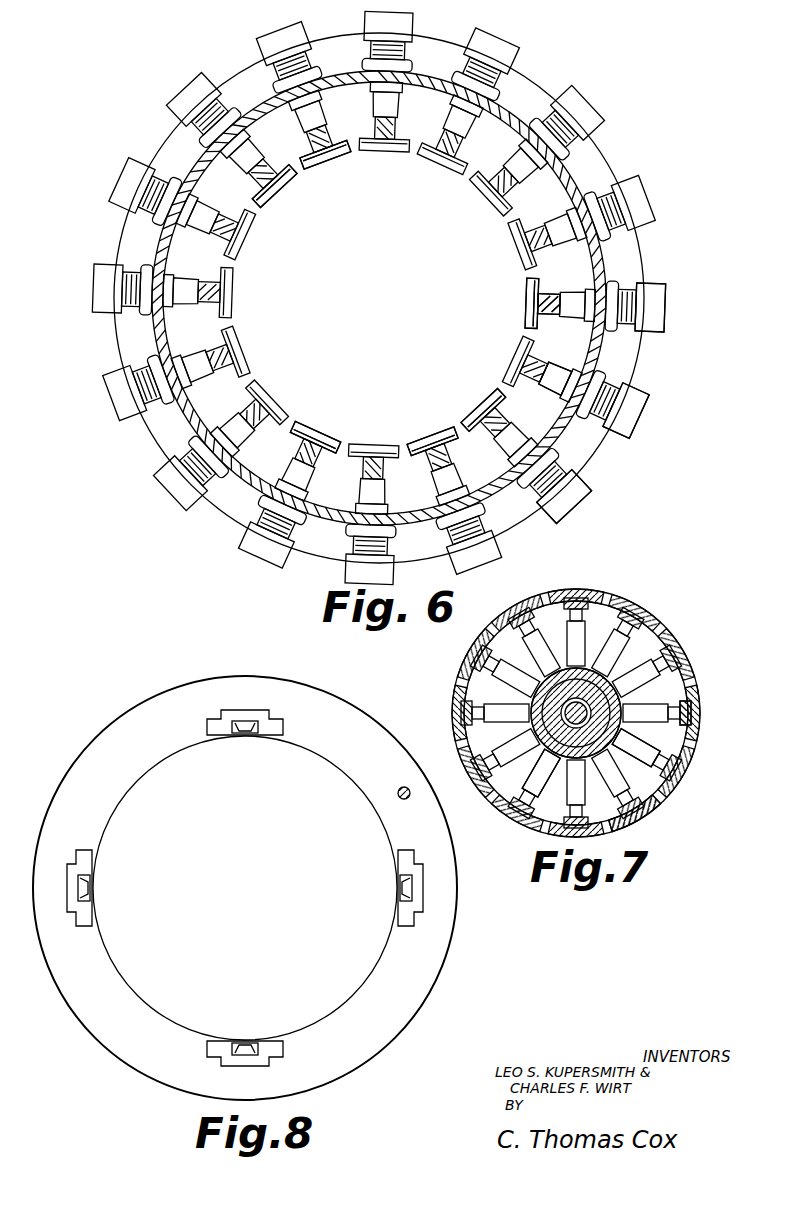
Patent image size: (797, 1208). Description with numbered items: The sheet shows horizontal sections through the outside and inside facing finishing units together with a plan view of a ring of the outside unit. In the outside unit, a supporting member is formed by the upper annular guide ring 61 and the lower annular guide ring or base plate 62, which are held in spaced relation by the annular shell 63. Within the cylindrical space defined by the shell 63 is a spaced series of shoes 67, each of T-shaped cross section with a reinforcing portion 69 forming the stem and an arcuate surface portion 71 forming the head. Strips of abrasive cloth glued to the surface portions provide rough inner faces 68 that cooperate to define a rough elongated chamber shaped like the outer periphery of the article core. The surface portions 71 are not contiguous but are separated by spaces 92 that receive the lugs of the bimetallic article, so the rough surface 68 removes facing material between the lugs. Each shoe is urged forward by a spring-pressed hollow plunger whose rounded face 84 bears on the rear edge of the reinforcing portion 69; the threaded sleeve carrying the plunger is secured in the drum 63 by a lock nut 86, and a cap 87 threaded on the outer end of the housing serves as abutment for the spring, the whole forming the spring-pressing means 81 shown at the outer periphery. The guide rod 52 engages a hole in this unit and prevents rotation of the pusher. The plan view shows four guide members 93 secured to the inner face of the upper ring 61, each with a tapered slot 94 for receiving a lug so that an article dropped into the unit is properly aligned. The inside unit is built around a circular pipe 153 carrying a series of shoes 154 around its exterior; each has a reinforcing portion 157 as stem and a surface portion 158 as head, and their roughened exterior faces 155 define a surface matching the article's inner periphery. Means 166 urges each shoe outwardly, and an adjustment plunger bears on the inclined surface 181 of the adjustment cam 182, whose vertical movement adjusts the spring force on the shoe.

In FIG. 6, the lower annular guide ring 62 is at (628, 350).
In FIG. 6, the annular shell 63 is at (588, 440).
In FIG. 6, the shoes 67 is at (290, 388).
In FIG. 6, the rough inner faces 68 is at (282, 197).
In FIG. 6, the reinforcing portion 69 is at (496, 445).
In FIG. 6, the surface portion 71 is at (500, 400).
In FIG. 6, the adjusting block 81 is at (590, 517).
In FIG. 6, the rounded face 84 is at (556, 376).
In FIG. 6, the lock nut 86 is at (645, 290).
In FIG. 6, the cap 87 is at (632, 410).
In FIG. 6, the spaces 92 is at (524, 334).
In FIG. 7, the circular pipe 153 is at (604, 750).
In FIG. 7, the shoes 154 is at (693, 788).
In FIG. 7, the roughened exterior faces 155 is at (698, 768).
In FIG. 7, the reinforcing portion 157 is at (688, 704).
In FIG. 7, the surface portion 158 is at (665, 805).
In FIG. 7, the urging means 166 is at (649, 747).
In FIG. 7, the inclined surface 181 is at (540, 733).
In FIG. 7, the adjustment cam 182 is at (548, 756).
In FIG. 8, the guide rod 52 is at (410, 796).
In FIG. 8, the upper annular guide ring 61 is at (412, 1000).
In FIG. 8, the guide members 93 is at (270, 1046).
In FIG. 8, the tapered slots 94 is at (252, 1042).